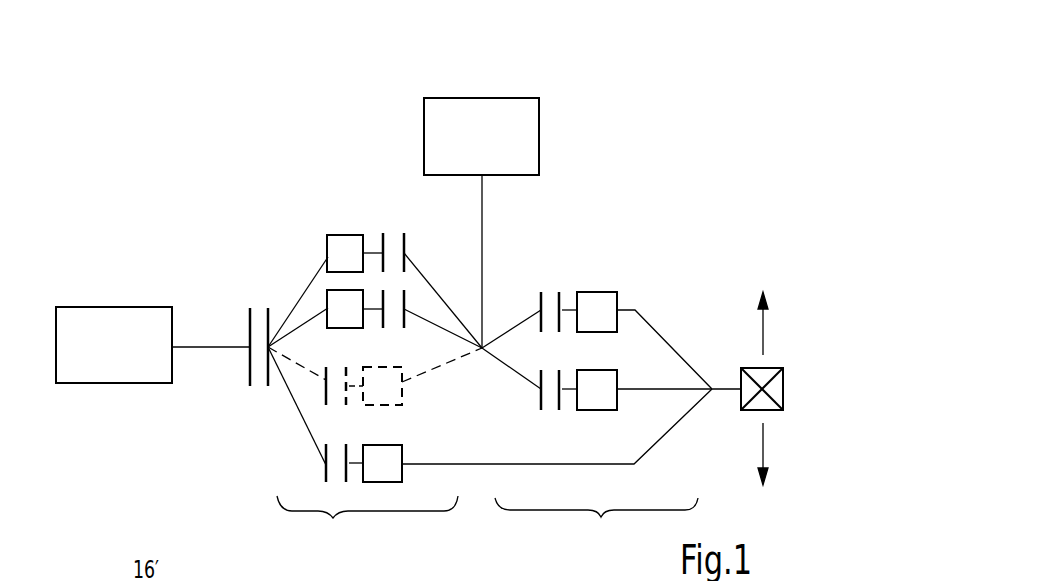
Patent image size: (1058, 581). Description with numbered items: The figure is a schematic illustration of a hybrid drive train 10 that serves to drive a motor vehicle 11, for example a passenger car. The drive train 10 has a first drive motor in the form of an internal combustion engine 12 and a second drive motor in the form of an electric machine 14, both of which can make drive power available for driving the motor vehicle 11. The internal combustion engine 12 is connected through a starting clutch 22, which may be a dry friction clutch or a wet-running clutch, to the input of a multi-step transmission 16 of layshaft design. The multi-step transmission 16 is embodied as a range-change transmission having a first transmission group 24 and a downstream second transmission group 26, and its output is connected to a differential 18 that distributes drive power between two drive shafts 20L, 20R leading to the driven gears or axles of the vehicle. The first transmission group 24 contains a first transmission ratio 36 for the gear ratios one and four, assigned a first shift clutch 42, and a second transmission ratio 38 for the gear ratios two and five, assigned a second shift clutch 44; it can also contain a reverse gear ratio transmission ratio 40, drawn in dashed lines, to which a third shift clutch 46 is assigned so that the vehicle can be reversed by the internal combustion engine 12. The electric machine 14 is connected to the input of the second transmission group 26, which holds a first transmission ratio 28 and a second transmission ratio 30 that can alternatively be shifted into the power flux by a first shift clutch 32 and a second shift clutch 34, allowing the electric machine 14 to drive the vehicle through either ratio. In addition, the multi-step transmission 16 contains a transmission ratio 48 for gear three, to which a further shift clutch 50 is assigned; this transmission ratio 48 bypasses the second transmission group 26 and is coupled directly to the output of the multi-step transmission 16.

The drive train 10 is at (727, 137).
The motor vehicle 11 is at (770, 157).
The internal combustion engine 12 is at (115, 307).
The electric machine 14 is at (508, 98).
The multi-step transmission 16 is at (607, 188).
The differential 18 is at (783, 385).
The drive shaft 20R is at (764, 328).
The drive shaft 20L is at (764, 443).
The starting clutch 22 is at (259, 306).
The first transmission group 24 is at (367, 520).
The second transmission group 26 is at (596, 520).
The first transmission ratio I 28 is at (603, 292).
The second transmission ratio II 30 is at (598, 411).
The first shift clutch 32 is at (541, 305).
The second shift clutch 34 is at (541, 393).
The first transmission ratio 1/4 36 is at (340, 235).
The second transmission ratio 2/5 38 is at (327, 298).
The reverse gear ratio transmission ratio R 40 is at (402, 392).
The first shift clutch 42 is at (405, 240).
The second shift clutch 44 is at (405, 300).
The third shift clutch 46 is at (326, 395).
The transmission ratio 3 48 is at (402, 468).
The further shift clutch 50 is at (326, 470).